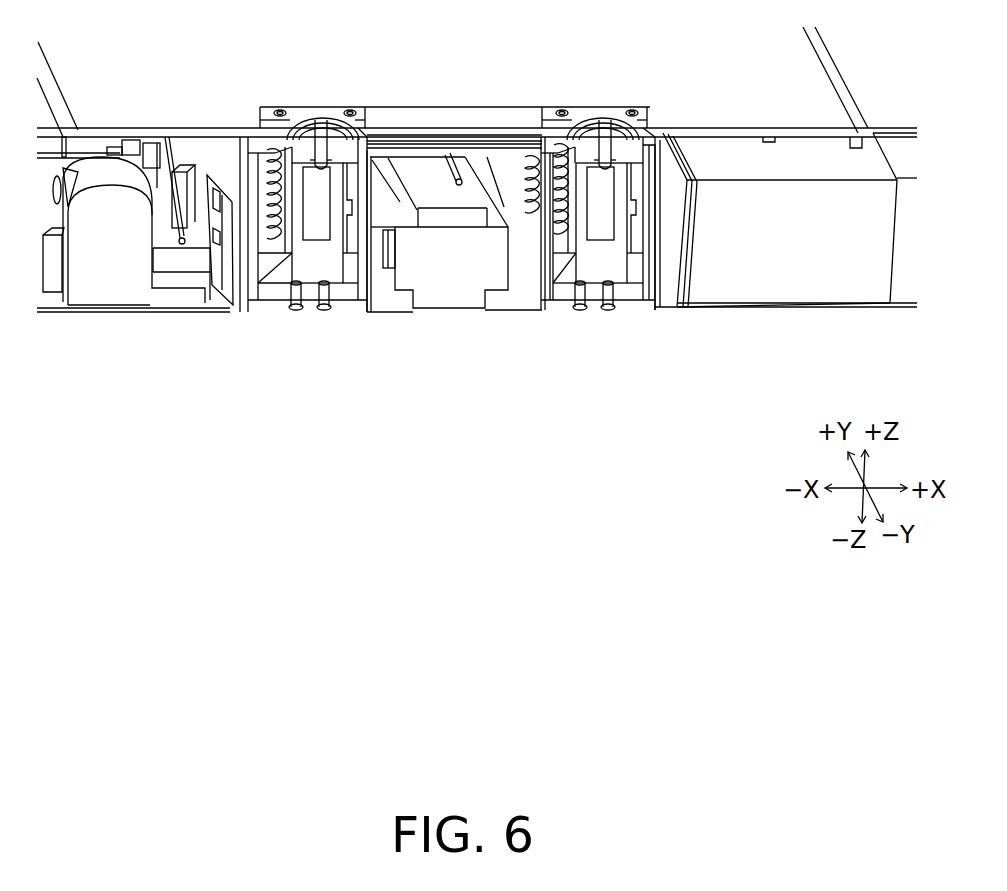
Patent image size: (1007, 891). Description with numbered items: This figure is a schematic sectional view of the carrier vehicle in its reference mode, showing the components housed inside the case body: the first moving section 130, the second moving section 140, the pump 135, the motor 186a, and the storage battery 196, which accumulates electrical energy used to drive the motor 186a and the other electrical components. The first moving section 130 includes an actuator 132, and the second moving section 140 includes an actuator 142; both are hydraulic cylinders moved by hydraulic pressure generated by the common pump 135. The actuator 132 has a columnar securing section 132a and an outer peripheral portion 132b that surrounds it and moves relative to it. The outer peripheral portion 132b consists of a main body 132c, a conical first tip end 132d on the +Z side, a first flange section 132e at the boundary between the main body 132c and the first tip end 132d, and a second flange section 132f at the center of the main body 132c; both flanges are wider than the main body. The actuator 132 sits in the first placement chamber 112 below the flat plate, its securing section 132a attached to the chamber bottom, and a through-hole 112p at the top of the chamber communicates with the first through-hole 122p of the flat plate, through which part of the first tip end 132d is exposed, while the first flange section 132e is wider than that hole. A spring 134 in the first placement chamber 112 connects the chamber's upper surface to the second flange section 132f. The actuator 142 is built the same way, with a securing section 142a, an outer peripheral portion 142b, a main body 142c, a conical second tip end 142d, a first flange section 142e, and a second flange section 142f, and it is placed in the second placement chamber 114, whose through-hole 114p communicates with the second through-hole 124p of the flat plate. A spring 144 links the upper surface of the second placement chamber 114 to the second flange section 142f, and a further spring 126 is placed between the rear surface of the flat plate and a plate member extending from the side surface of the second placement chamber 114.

The first placement chamber 112 is at (230, 307).
The through-hole 112p is at (358, 120).
The second placement chamber 114 is at (660, 272).
The through-hole 114p is at (640, 165).
The first through-hole 122p is at (307, 108).
The second through-hole 124p is at (617, 128).
The spring 126 is at (525, 180).
The first moving section 130 is at (280, 420).
The actuator 132 is at (307, 352).
The securing section 132a is at (323, 277).
The outer peripheral portion 132b is at (265, 293).
The main body 132c is at (268, 195).
The first tip end 132d is at (330, 120).
The first flange section 132e is at (290, 207).
The second flange section 132f is at (233, 297).
The spring 134 is at (240, 260).
The pump 135 is at (80, 290).
The second moving section 140 is at (557, 417).
The actuator 142 is at (605, 332).
The securing section 142a is at (612, 268).
The outer peripheral portion 142b is at (563, 253).
The main body 142c is at (562, 178).
The second tip end 142d is at (603, 118).
The first flange section 142e is at (657, 160).
The second flange section 142f is at (540, 255).
The spring 144 is at (570, 187).
The motor 186a is at (452, 285).
The storage battery 196 is at (777, 283).